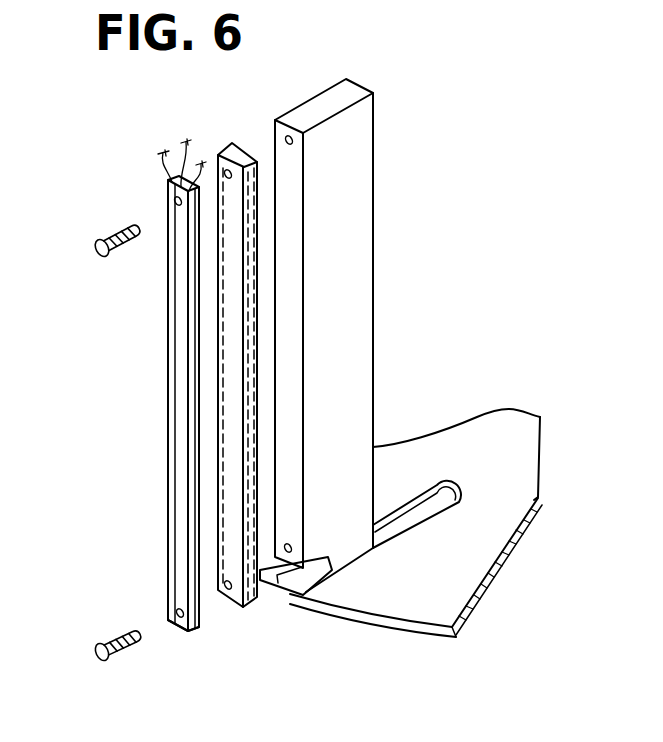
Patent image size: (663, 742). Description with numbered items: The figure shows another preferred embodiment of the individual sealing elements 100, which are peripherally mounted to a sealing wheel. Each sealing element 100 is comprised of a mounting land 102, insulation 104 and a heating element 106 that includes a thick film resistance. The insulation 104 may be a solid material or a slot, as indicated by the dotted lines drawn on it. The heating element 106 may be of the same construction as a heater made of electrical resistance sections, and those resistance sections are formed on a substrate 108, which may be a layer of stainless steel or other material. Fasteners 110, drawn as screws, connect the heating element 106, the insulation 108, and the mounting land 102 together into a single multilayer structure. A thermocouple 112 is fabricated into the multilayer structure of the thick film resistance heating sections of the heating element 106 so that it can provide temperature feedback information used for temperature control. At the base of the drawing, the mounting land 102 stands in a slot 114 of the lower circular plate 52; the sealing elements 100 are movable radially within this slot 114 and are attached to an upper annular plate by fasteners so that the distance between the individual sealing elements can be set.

The lower circular plate 52 is at (447, 590).
The individual sealing elements 100 is at (411, 306).
The mounting land 102 is at (360, 185).
The insulation 104 is at (241, 163).
The heating element 106 is at (146, 322).
The substrate 108 is at (200, 623).
The fasteners 110 is at (101, 664).
The thermocouple 112 is at (182, 411).
The slot 114 is at (442, 497).